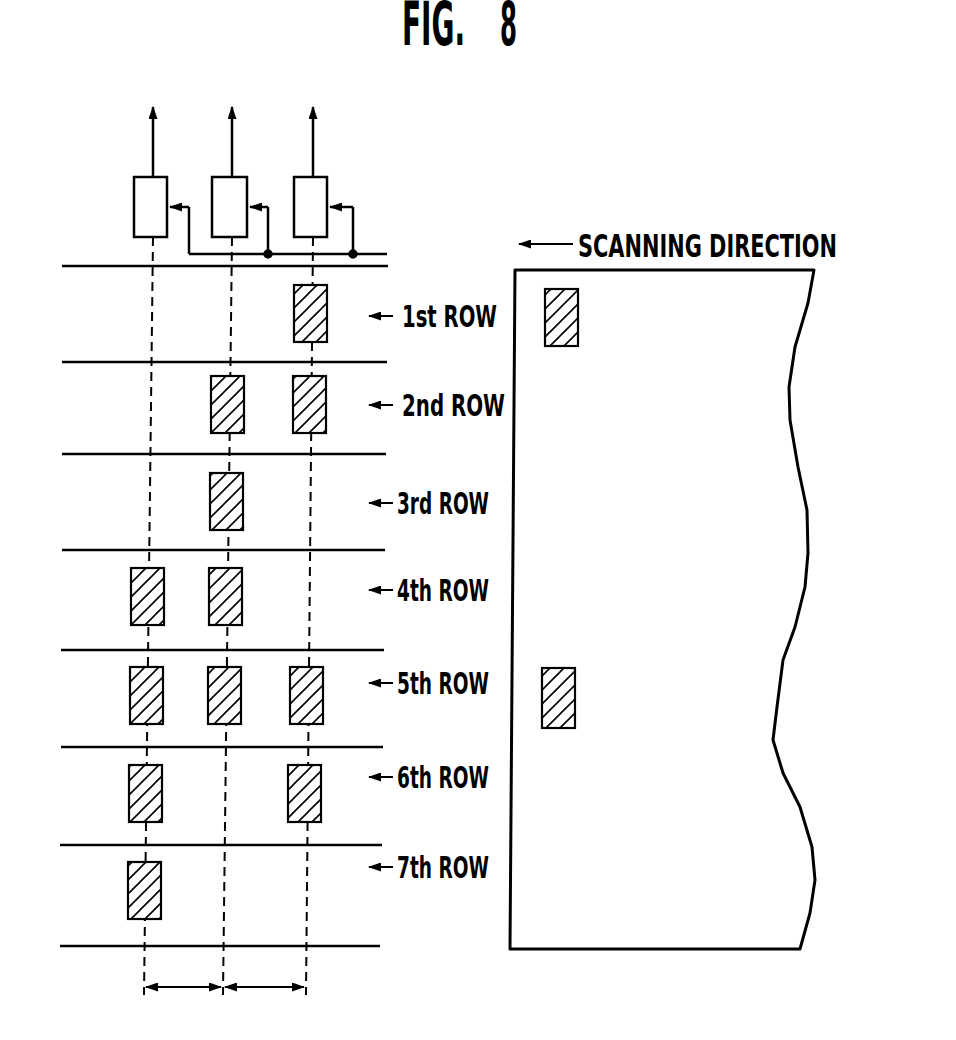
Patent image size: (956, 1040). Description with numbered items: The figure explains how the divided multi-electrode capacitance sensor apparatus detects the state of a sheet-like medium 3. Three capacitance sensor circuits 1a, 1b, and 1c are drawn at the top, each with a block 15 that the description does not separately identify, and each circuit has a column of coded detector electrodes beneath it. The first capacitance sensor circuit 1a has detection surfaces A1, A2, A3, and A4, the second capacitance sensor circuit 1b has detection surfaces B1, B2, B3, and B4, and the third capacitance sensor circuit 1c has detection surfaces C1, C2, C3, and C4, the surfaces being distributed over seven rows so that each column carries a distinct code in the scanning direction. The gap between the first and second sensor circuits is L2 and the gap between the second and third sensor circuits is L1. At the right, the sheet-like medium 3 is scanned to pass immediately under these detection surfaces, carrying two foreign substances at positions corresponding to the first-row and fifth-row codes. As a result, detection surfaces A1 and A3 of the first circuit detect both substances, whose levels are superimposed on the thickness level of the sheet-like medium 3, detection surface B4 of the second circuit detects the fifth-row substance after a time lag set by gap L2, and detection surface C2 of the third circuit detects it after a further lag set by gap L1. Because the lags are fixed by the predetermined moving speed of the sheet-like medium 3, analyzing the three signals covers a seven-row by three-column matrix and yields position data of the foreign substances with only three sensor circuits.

The first capacitance sensor circuit 1a is at (320, 166).
The second capacitance sensor circuit 1b is at (238, 166).
The third capacitance sensor circuit 1c is at (158, 166).
The delay circuit 15 is at (134, 200).
The sheet-like medium 3 is at (690, 933).
The detection surface A1 is at (294, 318).
The detection surface A2 is at (293, 408).
The detection surface A3 is at (290, 700).
The detection surface A4 is at (288, 800).
The detection surface B1 is at (211, 408).
The detection surface B2 is at (210, 505).
The detection surface B3 is at (209, 604).
The detection surface B4 is at (208, 700).
The detection surface C1 is at (131, 600).
The detection surface C2 is at (130, 697).
The detection surface C3 is at (129, 798).
The detection surface C4 is at (128, 897).
The gap between the second and third sensor circuits L1 is at (183, 972).
The gap between the first and second sensor circuits L2 is at (264, 972).